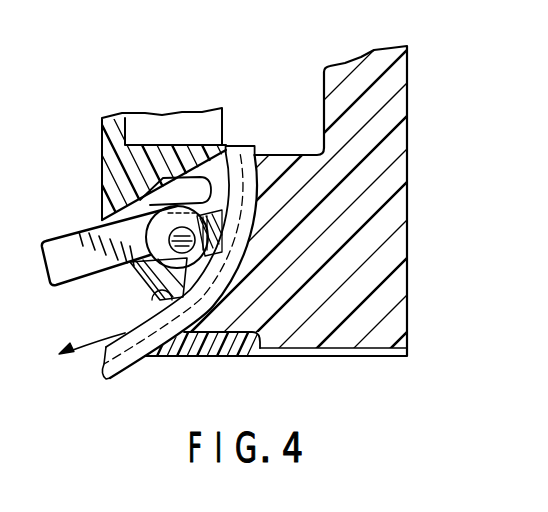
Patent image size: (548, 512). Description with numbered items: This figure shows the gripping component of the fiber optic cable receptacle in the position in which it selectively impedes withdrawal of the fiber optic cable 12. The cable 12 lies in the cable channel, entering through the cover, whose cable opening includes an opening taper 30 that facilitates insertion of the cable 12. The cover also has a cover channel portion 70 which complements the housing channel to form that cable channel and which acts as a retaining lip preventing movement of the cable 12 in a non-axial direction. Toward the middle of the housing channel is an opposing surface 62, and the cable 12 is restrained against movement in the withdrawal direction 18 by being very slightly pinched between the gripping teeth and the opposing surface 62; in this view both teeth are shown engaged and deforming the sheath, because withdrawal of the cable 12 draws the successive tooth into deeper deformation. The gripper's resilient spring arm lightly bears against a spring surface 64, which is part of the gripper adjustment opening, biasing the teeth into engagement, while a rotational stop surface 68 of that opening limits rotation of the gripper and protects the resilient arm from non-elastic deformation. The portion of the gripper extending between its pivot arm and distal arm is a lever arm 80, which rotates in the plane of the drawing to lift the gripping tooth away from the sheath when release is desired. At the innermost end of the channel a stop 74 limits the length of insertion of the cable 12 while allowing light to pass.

The fiber optic cable 12 is at (125, 378).
The withdrawal direction 18 is at (93, 345).
The opening taper 30 is at (172, 343).
The opposing surface 62 is at (252, 228).
The spring surface 64 is at (100, 207).
The rotational stop surface 68 is at (157, 263).
The cover channel portion 70 is at (220, 163).
The stop 74 is at (240, 144).
The lever arm 80 is at (62, 247).